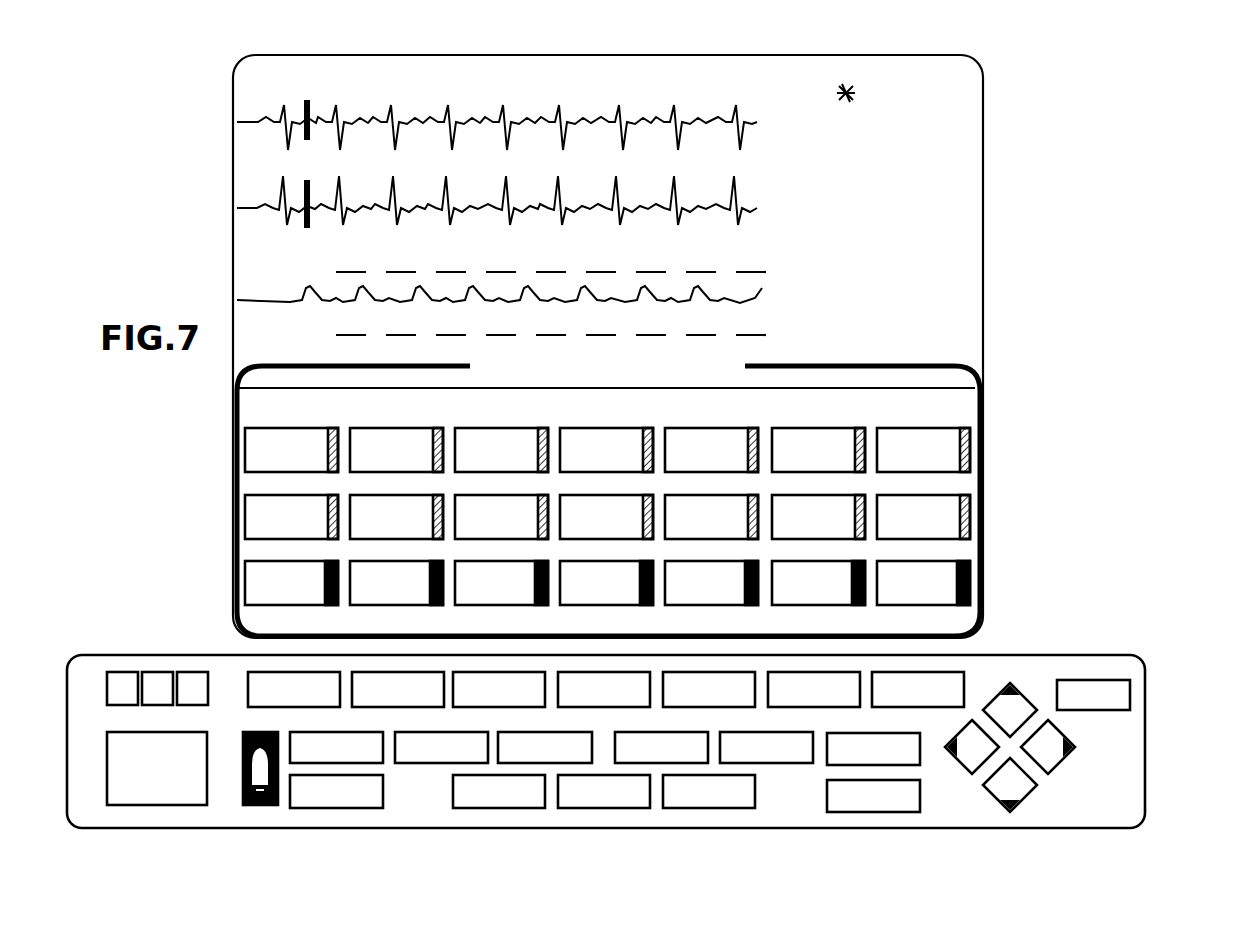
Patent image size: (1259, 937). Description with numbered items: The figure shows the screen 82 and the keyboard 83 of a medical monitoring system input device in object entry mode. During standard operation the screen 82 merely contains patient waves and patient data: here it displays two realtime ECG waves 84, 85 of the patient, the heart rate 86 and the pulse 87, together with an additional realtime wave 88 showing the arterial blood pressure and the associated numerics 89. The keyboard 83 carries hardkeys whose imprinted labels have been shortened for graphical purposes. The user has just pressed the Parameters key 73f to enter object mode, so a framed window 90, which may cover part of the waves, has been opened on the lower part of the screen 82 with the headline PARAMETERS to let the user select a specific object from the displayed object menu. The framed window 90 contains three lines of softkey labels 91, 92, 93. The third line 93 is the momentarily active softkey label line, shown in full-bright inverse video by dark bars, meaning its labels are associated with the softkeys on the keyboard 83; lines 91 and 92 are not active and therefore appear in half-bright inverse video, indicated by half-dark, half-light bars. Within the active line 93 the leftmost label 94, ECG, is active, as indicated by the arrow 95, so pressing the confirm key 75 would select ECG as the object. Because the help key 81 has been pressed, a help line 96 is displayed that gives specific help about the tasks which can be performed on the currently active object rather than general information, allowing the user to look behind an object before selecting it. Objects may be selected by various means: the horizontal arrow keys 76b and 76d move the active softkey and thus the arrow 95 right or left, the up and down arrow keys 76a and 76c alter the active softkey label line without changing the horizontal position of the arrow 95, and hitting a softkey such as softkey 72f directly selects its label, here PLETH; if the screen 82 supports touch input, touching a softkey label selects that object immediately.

The screen 82 is at (1000, 96).
The keyboard 83 is at (653, 731).
The realtime ECG wave 84 is at (533, 120).
The realtime ECG wave 85 is at (590, 183).
The heart rate 86 is at (838, 82).
The pulse 87 is at (938, 163).
The realtime wave 88 is at (240, 298).
The numerics 89 is at (875, 295).
The framed window 90 is at (985, 428).
The softkey label line 91 is at (232, 450).
The softkey label line 92 is at (232, 522).
The active softkey label line 93 is at (537, 592).
The leftmost label 94 is at (248, 592).
The arrow 95 is at (262, 613).
The help line 96 is at (232, 402).
The softkey 72f is at (840, 690).
The Parameters key 73f is at (921, 746).
The confirm key 75 is at (1105, 710).
The up arrow key 76a is at (1023, 708).
The arrow key 76b is at (975, 767).
The down arrow key 76c is at (1020, 790).
The arrow key 76d is at (1045, 770).
The help key 81 is at (836, 812).